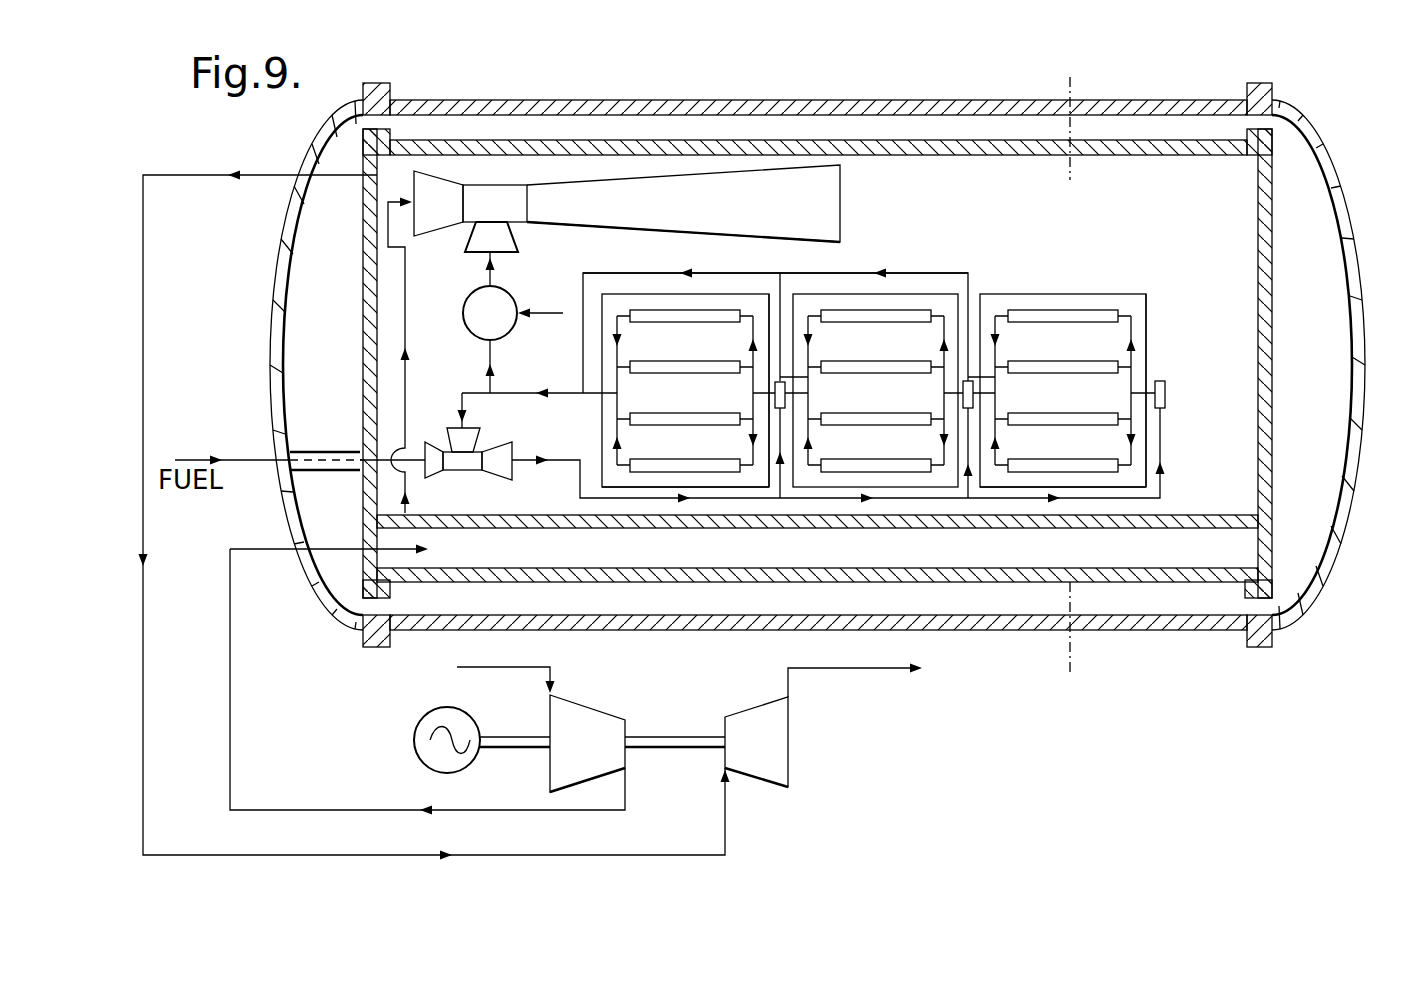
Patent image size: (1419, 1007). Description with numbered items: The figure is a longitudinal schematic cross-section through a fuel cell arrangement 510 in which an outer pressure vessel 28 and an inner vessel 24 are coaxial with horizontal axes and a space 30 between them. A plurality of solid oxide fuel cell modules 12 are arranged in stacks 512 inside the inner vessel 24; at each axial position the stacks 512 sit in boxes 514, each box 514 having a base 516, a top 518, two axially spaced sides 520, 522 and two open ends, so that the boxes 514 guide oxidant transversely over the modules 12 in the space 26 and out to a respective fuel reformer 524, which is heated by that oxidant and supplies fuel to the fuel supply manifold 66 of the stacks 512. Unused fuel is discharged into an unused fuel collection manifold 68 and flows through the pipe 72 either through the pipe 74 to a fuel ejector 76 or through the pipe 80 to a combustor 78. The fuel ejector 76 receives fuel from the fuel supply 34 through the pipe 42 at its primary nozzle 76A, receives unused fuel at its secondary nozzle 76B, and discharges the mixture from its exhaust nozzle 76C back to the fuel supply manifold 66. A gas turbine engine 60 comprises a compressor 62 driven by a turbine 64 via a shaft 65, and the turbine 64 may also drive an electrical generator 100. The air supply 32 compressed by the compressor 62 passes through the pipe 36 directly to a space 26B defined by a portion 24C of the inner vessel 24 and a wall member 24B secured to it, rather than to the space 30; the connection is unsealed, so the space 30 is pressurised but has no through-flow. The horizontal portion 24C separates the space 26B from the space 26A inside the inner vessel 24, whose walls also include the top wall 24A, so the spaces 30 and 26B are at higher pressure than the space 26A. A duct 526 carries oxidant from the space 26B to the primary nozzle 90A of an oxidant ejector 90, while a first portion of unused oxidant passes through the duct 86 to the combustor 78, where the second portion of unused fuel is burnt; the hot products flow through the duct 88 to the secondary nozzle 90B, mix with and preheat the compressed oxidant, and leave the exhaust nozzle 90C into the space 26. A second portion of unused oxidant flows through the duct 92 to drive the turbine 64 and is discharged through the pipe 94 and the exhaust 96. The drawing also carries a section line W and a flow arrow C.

The solid oxide fuel cell module 12 is at (704, 459).
The inner vessel 24 is at (1117, 147).
The inner vessel top wall 24A is at (1217, 140).
The wall member 24B is at (1157, 582).
The portion of inner vessel 24C is at (1040, 522).
The space within inner vessel 26 is at (1200, 224).
The space in inner vessel 26A is at (1243, 436).
The space 26B is at (1205, 548).
The outer pressure vessel 28 is at (993, 107).
The space between inner vessel and outer pressure vessel 30 is at (1330, 298).
The air inlet 32 is at (477, 668).
The fuel supply 34 is at (183, 458).
The pipe 36 is at (270, 551).
The pipe 42 is at (245, 465).
The gas turbine engine 60 is at (700, 774).
The compressor 62 is at (560, 772).
The turbine 64 is at (773, 773).
The shaft 65 is at (523, 740).
The fuel supply manifold 66 is at (749, 343).
The unused fuel collection manifold 68 is at (622, 341).
The pipe 72 is at (523, 392).
The pipe 74 is at (478, 392).
The fuel ejector 76 is at (466, 470).
The primary nozzle 76A is at (440, 442).
The secondary nozzle 76B is at (468, 437).
The exhaust nozzle 76C is at (505, 463).
The combustor 78 is at (463, 313).
The pipe 80 is at (492, 356).
The duct 86 is at (556, 313).
The duct 88 is at (488, 280).
The oxidant ejector 90 is at (500, 190).
The primary nozzle 90A is at (428, 185).
The secondary nozzle 90B is at (514, 240).
The exhaust nozzle 90C is at (632, 190).
The duct 92 is at (282, 173).
The pipe 94 is at (843, 672).
The exhaust 96 is at (920, 674).
The electrical generator 100 is at (414, 740).
The fuel cell arrangement 510 is at (838, 75).
The stack 512 is at (758, 267).
The box 514 is at (640, 294).
The base 516 is at (657, 487).
The top 518 is at (702, 294).
The side 520 is at (584, 452).
The side 522 is at (773, 478).
The fuel reformer 524 is at (775, 386).
The duct 526 is at (405, 325).
The section line W is at (1112, 78).
The flow direction C is at (880, 203).